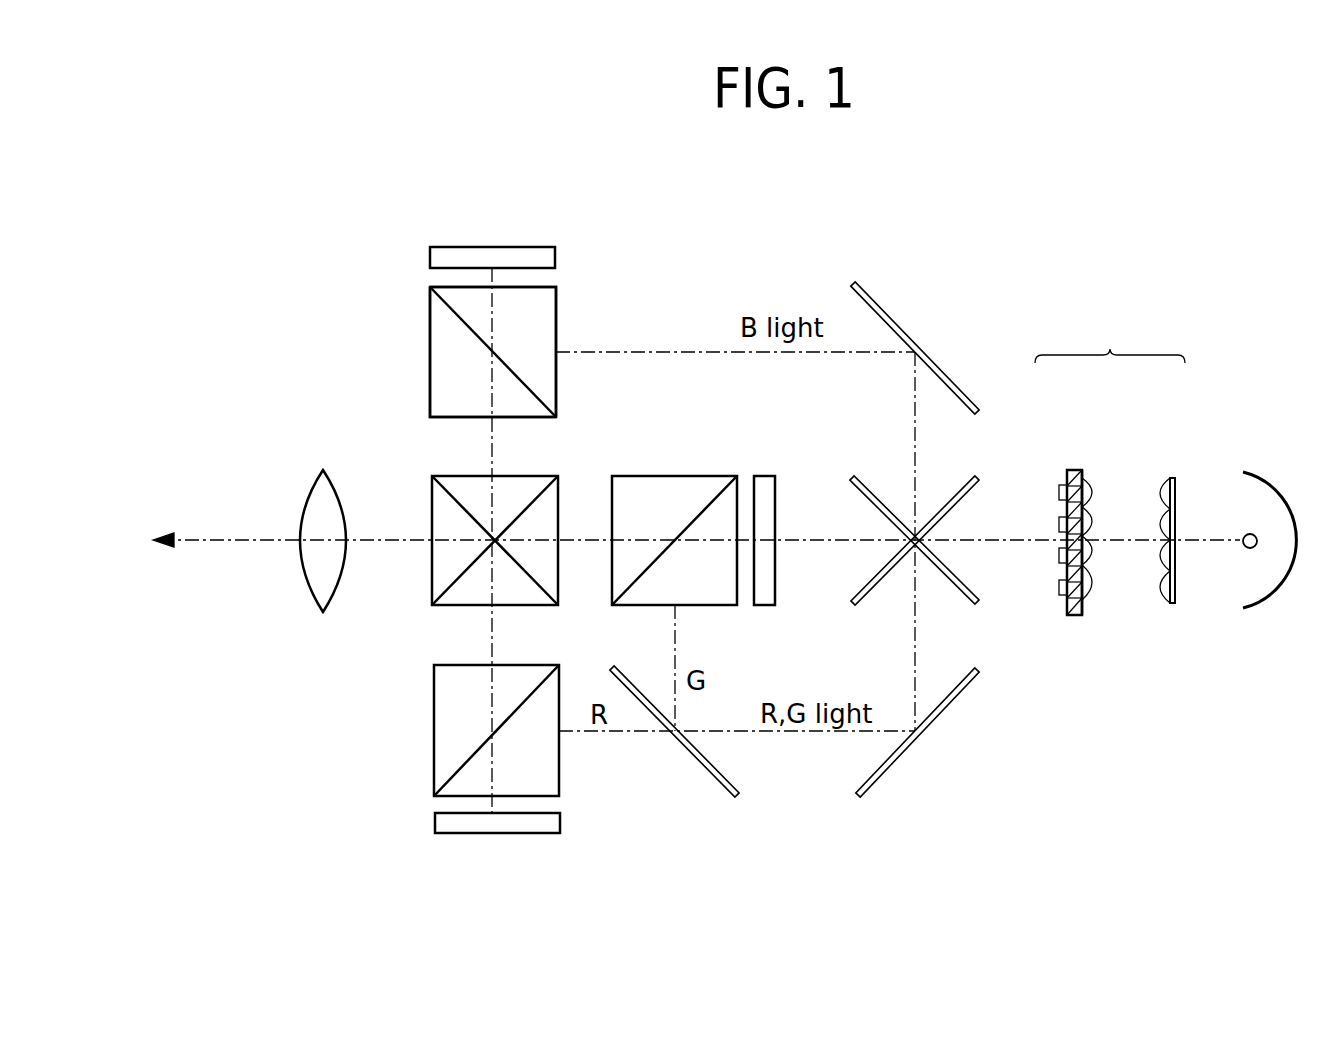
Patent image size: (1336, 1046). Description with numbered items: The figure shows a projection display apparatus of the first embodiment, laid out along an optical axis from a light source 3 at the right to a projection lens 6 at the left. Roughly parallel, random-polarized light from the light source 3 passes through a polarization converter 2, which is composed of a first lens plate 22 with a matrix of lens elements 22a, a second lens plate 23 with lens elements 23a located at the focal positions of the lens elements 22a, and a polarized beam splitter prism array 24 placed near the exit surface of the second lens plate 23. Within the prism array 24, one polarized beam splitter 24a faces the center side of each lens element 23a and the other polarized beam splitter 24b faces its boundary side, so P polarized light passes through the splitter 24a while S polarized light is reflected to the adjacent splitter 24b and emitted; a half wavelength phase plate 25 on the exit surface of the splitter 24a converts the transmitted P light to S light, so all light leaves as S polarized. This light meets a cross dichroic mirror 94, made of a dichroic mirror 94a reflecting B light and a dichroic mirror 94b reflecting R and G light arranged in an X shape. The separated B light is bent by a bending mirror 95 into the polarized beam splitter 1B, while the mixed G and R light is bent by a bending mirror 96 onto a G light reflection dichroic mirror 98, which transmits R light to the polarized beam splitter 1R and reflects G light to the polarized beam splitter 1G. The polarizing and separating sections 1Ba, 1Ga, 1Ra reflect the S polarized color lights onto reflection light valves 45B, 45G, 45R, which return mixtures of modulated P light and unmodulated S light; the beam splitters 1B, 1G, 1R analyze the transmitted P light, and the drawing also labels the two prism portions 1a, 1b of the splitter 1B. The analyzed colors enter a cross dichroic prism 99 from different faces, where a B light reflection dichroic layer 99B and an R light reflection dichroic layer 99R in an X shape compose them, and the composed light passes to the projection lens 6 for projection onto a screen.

The projection lens 6 is at (304, 507).
The light valve 45B is at (548, 246).
The polarized beam splitter 1B is at (506, 343).
The prism 1a is at (538, 328).
The prism 1b is at (430, 388).
The polarizing and separating section 1Ba is at (532, 386).
The cross dichroic prism 99 is at (499, 547).
The B light reflection dichroic layer 99B is at (450, 600).
The R light reflection dichroic layer 99R is at (528, 598).
The polarized beam splitter 1R is at (487, 735).
The polarizing and separating section 1Ra is at (455, 776).
The light valve 45R is at (460, 834).
The polarized beam splitter 1G is at (698, 542).
The polarizing and separating section 1Ga is at (708, 496).
The light valve 45G is at (776, 540).
The bending mirror 95 is at (946, 373).
The cross dichroic mirror 94 is at (914, 560).
The dichroic mirror 94a is at (866, 490).
The dichroic mirror 94b is at (958, 490).
The bending mirror 96 is at (888, 776).
The G light reflection dichroic mirror 98 is at (718, 796).
The polarization converter 2 is at (1132, 514).
The first lens plate 22 is at (1210, 492).
The lens element 22a is at (1177, 498).
The second lens plate 23 is at (1123, 498).
The lens element 23a is at (1093, 494).
The polarized beam splitter prism array 24 is at (1091, 557).
The polarized beam splitter 24a is at (1087, 548).
The polarized beam splitter 24b is at (1067, 495).
The ½ wavelength phase plate 25 is at (1060, 556).
The light source 3 is at (1270, 606).